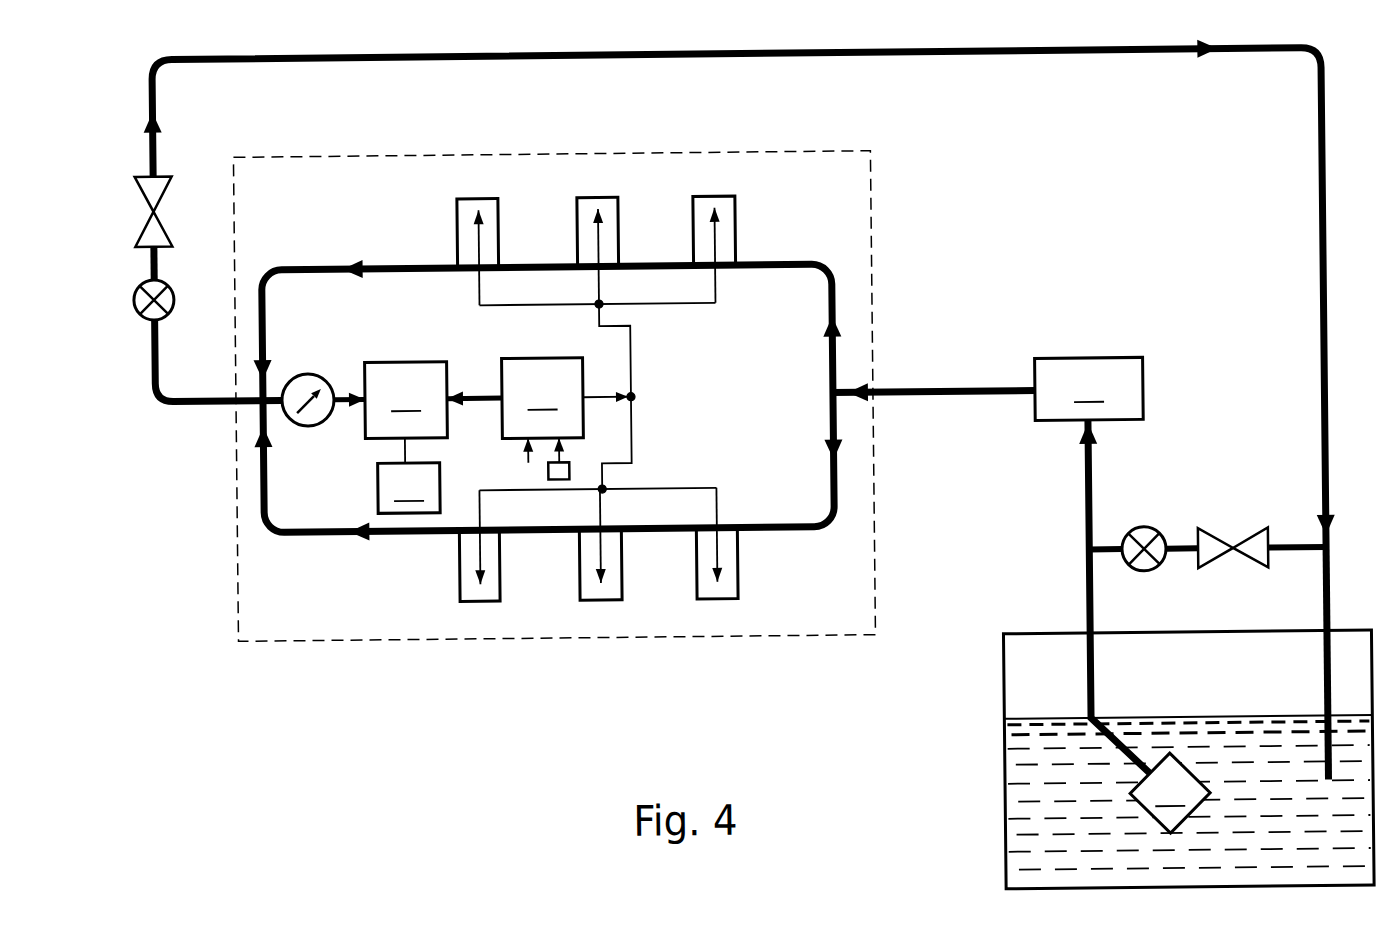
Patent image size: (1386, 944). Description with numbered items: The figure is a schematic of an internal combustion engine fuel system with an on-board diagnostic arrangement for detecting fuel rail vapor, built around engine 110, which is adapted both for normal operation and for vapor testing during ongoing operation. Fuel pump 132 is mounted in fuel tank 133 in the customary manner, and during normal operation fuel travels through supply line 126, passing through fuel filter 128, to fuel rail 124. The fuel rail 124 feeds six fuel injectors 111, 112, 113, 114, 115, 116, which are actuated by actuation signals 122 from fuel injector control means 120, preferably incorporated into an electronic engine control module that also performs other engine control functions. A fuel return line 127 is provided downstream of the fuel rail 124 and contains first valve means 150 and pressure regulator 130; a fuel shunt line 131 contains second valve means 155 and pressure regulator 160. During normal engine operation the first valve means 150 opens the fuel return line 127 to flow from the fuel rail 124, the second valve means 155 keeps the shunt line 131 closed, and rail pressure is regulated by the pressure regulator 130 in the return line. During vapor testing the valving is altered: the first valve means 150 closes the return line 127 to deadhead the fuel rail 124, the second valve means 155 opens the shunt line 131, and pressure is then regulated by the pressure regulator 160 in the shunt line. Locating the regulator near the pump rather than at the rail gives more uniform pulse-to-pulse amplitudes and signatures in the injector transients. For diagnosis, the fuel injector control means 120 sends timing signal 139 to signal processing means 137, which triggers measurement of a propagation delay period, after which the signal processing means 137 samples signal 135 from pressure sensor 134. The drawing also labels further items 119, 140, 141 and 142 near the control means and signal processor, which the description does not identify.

The engine 110 is at (873, 263).
The fuel injector 111 is at (737, 230).
The fuel injector 112 is at (620, 208).
The fuel injector 113 is at (500, 250).
The fuel injector 114 is at (498, 550).
The fuel injector 115 is at (620, 540).
The fuel injector 116 is at (736, 548).
The input signal line 119 is at (526, 455).
The fuel injector control means 120 is at (567, 397).
The actuation signals 122 is at (631, 372).
The fuel rail 124 is at (767, 273).
The supply line 126 is at (985, 392).
The fuel return line 127 is at (1020, 57).
The fuel filter 128 is at (1089, 388).
The pressure regulator 130 is at (172, 188).
The fuel shunt line 131 is at (1285, 557).
The fuel pump 132 is at (1170, 793).
The fuel tank 133 is at (1001, 776).
The pressure sensor 134 is at (297, 372).
The signal 135 is at (328, 418).
The signal processing means 137 is at (406, 400).
The timing signal 139 is at (470, 393).
The connection line 140 is at (404, 447).
The power supply 141 is at (409, 488).
The sensor 142 is at (569, 470).
The first valve means 150 is at (168, 281).
The second valve means 155 is at (1150, 532).
The pressure regulator 160 is at (1220, 535).